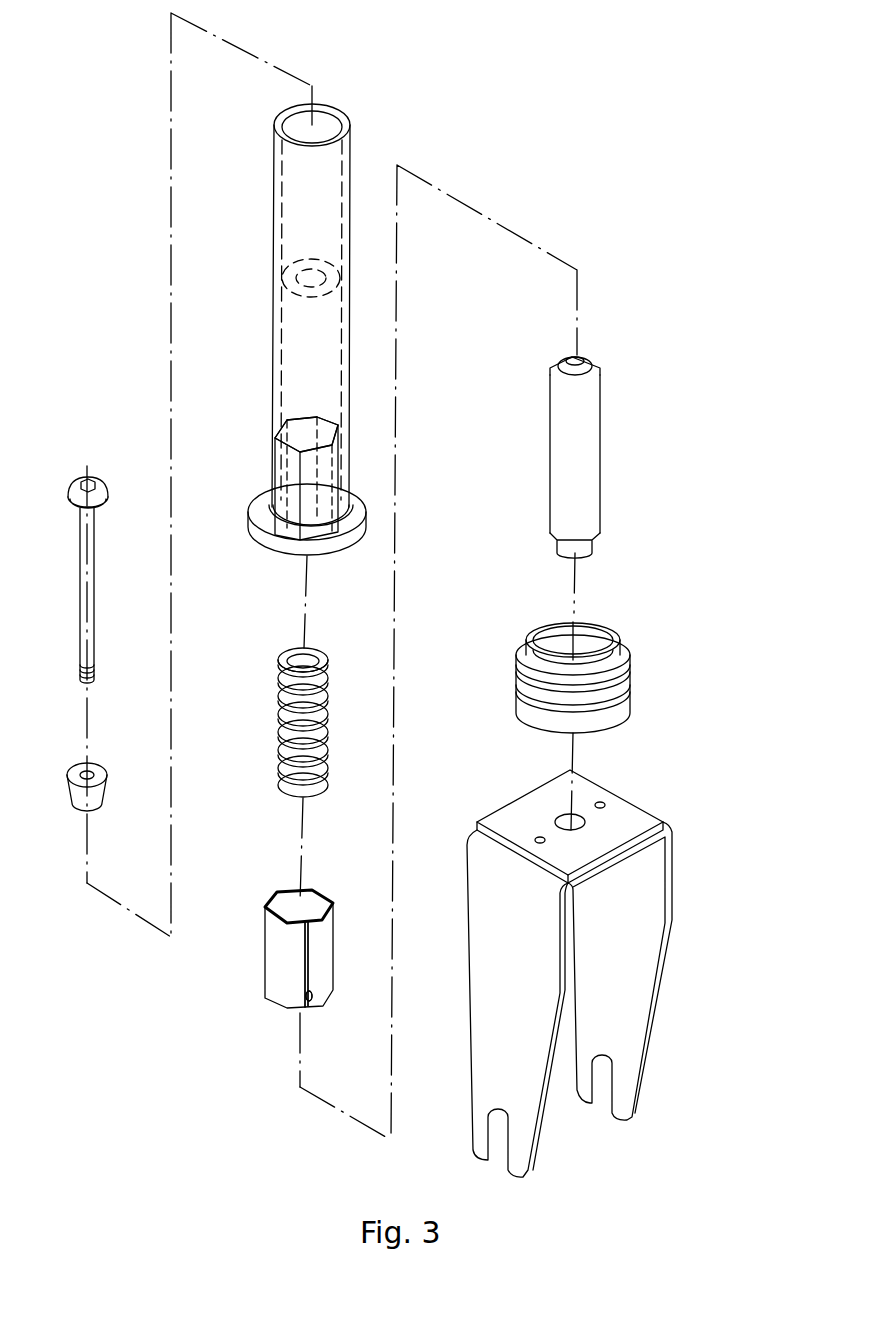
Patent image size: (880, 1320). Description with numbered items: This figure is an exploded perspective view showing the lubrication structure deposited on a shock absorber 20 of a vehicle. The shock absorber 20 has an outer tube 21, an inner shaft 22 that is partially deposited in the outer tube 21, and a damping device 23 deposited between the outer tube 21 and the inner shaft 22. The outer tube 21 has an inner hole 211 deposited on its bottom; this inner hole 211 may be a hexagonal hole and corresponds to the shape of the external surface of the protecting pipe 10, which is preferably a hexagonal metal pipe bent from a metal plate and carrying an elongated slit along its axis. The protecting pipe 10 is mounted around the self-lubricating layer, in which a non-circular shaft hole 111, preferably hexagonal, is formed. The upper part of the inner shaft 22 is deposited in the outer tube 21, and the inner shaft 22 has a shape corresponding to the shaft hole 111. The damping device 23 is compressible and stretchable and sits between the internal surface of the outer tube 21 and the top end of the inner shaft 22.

The protecting pipe 10 is at (243, 973).
The shaft hole 111 is at (300, 1012).
The shock absorber 20 is at (627, 408).
The outer tube 21 is at (290, 343).
The inner hole 211 is at (292, 467).
The inner shaft 22 is at (560, 440).
The damping device 23 is at (283, 733).